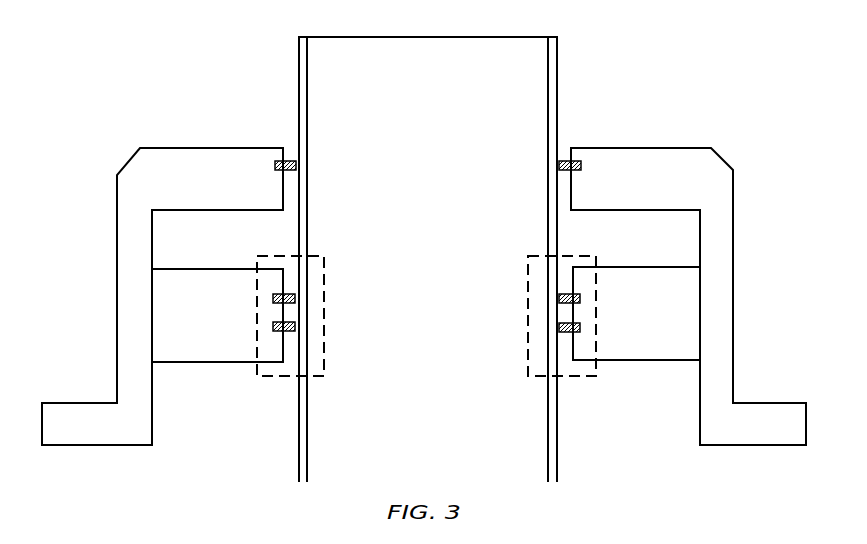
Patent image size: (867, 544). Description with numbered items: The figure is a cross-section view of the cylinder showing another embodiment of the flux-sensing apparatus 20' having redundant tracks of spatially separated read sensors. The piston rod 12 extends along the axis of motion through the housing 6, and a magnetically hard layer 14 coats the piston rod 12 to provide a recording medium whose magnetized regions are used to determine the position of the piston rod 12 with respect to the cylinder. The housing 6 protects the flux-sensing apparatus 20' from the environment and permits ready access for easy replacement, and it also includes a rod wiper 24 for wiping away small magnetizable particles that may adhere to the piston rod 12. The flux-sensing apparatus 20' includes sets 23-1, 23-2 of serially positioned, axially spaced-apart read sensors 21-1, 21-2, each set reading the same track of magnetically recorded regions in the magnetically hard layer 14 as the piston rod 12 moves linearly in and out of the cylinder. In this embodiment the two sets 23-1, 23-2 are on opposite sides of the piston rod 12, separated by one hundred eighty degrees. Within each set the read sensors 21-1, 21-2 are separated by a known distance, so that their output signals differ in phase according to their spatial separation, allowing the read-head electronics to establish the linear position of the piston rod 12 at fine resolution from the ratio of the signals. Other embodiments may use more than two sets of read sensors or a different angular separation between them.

The housing 6 is at (135, 155).
The piston rod 12 is at (417, 186).
The magnetically hard layer 14 is at (299, 47).
The flux-sensing apparatus 20' is at (426, 314).
The read sensor 21-1 is at (274, 296).
The read sensor 21-2 is at (275, 331).
The set of read sensors 23-1 is at (324, 303).
The set of read sensors 23-2 is at (527, 304).
The rod wiper 24 is at (282, 163).